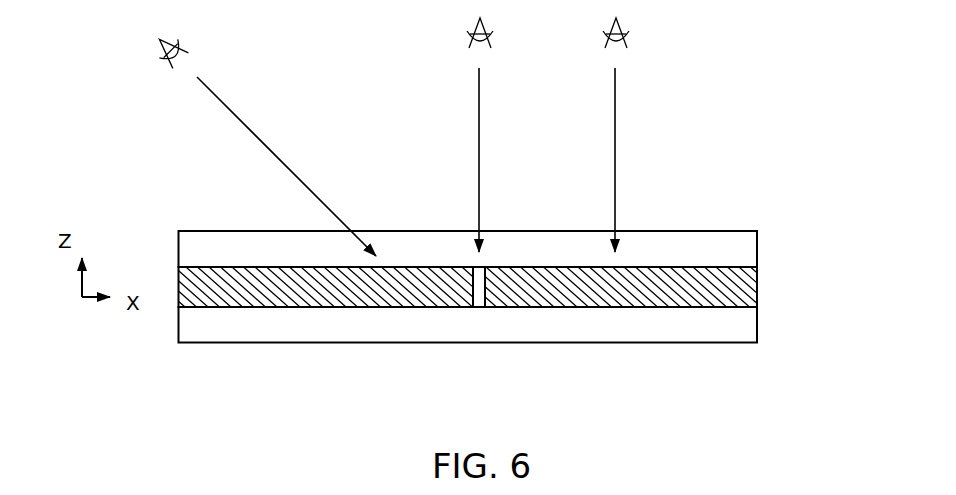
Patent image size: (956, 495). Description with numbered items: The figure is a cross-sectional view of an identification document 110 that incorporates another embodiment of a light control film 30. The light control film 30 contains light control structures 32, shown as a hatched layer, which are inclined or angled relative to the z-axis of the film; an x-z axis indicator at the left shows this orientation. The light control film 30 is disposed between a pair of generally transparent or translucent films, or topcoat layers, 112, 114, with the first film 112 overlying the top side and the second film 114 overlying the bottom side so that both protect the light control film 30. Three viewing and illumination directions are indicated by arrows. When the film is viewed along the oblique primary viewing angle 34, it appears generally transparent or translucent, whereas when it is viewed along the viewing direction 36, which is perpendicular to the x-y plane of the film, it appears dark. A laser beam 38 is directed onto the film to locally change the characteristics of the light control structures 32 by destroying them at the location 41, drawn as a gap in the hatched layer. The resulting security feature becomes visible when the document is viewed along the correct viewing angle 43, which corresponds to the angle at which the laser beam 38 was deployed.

The light control film 30 is at (770, 276).
The light control structures 32 is at (272, 292).
The primary viewing angle 34 is at (166, 68).
The viewing direction 36 is at (630, 38).
The laser beam 38 is at (479, 113).
The location 41 is at (481, 300).
The correct viewing angle 43 is at (494, 38).
The identification document 110 is at (726, 140).
The transparent or translucent film 112 is at (682, 247).
The transparent or translucent film 114 is at (691, 328).